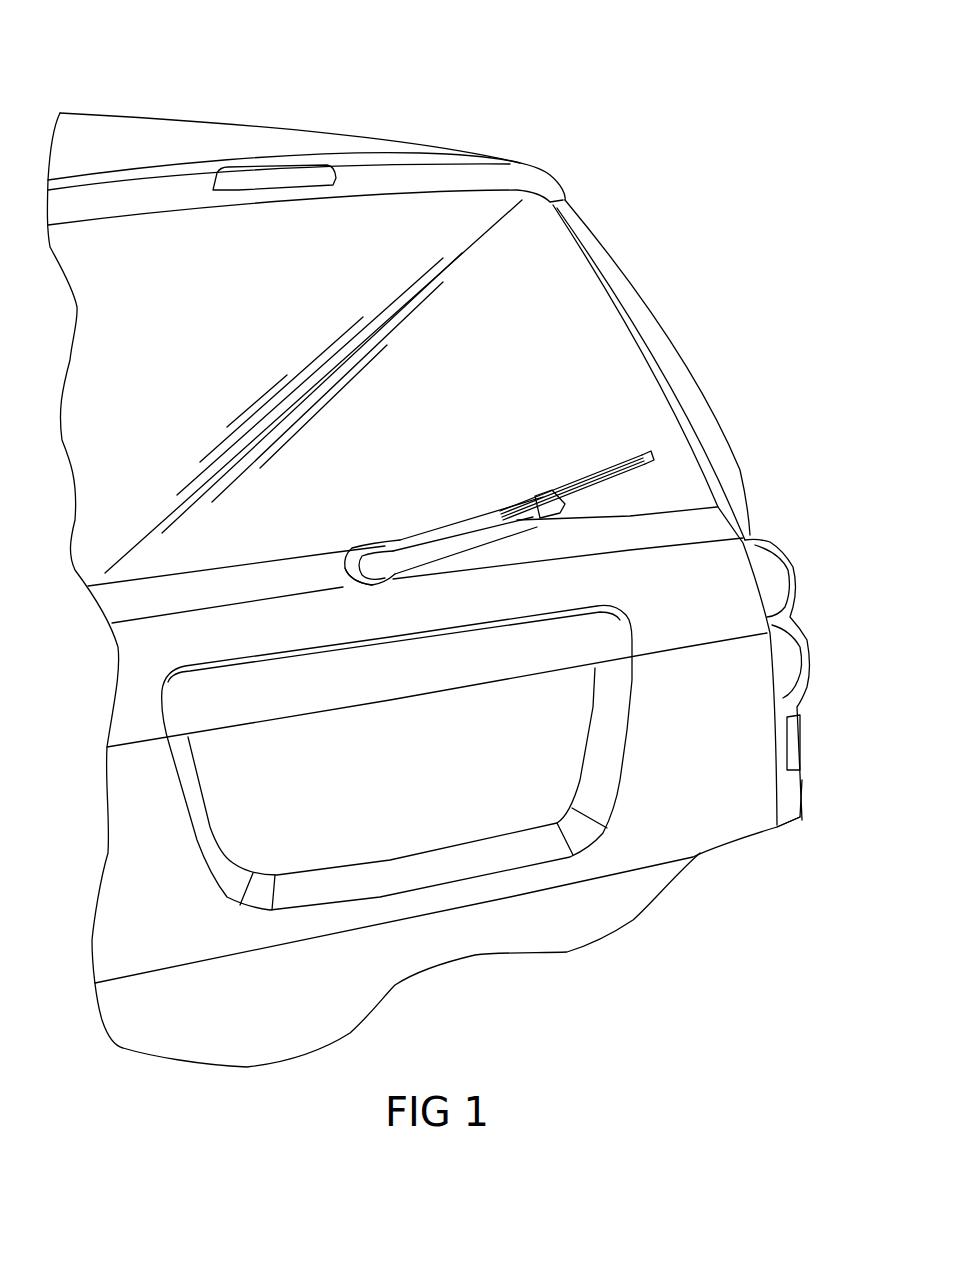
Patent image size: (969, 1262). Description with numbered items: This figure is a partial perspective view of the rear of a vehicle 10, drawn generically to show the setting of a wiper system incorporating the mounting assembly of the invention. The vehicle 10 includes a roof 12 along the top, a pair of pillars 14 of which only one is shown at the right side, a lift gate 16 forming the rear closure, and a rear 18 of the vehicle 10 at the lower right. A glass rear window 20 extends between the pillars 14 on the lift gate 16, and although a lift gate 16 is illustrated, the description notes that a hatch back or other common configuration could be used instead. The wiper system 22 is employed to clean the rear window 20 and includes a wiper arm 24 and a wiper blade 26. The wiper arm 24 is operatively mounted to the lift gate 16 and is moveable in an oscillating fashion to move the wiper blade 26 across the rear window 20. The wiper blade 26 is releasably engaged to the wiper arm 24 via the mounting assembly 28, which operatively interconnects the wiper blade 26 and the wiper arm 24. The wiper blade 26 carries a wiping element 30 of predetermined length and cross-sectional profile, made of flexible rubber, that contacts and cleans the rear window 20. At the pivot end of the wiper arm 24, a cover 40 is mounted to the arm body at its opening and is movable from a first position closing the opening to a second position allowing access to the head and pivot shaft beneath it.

The vehicle 10 is at (480, 113).
The roof 12 is at (257, 133).
The pillar 14 is at (623, 283).
The lift gate 16 is at (757, 534).
The rear of the vehicle 18 is at (788, 793).
The rear window 20 is at (497, 396).
The wiper system 22 is at (499, 492).
The wiper arm 24 is at (400, 533).
The wiper blade 26 is at (577, 455).
The mounting assembly 28 is at (560, 527).
The wiping element 30 is at (595, 467).
The cover 40 is at (367, 588).